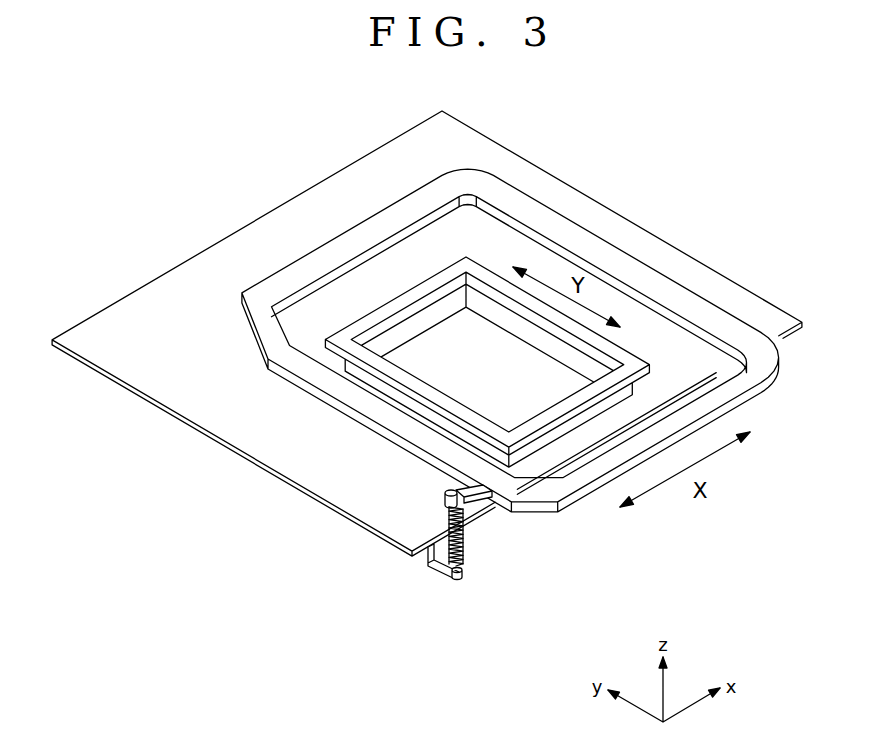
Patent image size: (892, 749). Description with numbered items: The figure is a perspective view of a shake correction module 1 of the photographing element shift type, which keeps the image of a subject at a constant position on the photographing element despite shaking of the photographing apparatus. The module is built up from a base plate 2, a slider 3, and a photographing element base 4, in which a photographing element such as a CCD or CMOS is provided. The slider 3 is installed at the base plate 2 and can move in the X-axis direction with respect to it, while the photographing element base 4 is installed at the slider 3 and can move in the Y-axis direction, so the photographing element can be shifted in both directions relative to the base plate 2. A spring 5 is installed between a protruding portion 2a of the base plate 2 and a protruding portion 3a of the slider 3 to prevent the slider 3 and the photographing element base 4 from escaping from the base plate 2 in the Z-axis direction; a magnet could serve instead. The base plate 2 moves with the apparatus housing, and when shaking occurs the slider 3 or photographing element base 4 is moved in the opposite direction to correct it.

The shake correction module 1 is at (190, 217).
The base plate 2 is at (330, 200).
The protruding portion of the base plate 2a is at (437, 568).
The slider 3 is at (578, 243).
The protruding portion of the slider 3a is at (445, 498).
The photographing element base 4 is at (479, 270).
The spring 5 is at (467, 552).